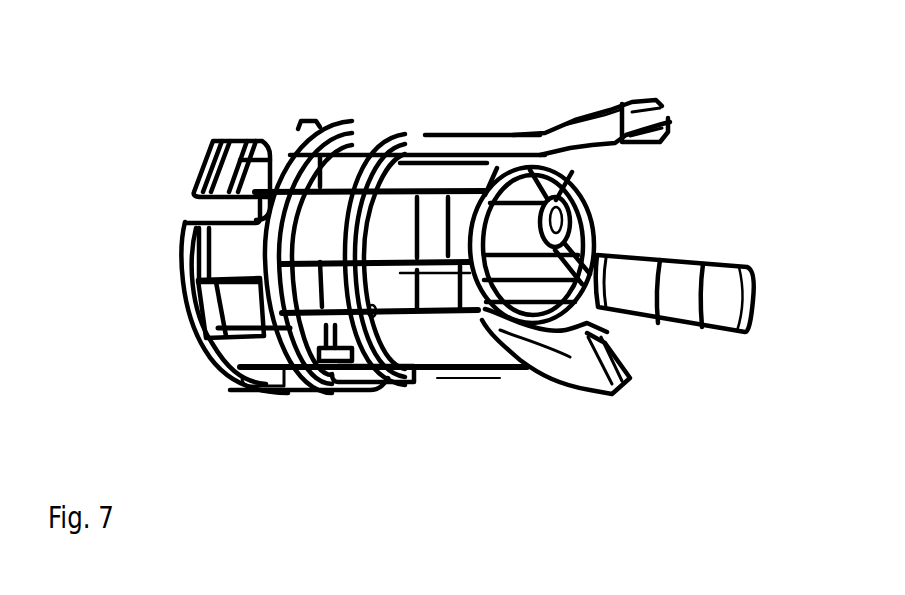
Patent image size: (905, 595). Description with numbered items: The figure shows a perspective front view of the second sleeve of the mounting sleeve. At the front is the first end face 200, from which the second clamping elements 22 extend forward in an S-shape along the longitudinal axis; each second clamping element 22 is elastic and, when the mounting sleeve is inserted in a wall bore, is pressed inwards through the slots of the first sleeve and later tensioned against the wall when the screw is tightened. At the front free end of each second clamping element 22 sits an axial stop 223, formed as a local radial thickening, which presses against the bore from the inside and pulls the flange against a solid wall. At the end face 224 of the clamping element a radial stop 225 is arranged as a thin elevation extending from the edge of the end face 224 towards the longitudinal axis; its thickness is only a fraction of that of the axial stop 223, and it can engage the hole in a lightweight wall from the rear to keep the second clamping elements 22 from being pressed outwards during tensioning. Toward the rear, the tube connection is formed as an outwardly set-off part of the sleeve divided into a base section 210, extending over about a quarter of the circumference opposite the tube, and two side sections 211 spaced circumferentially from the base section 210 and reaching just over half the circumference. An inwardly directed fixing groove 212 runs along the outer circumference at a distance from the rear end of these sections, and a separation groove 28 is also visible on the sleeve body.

The second clamping element 22 is at (702, 163).
The separation groove 28 is at (425, 108).
The first end face 200 is at (587, 195).
The base section 210 is at (181, 363).
The side section 211 is at (228, 108).
The fixing groove 212 is at (203, 162).
The axial stop 223 is at (640, 100).
The end face 224 is at (664, 118).
The radial stop 225 is at (670, 127).